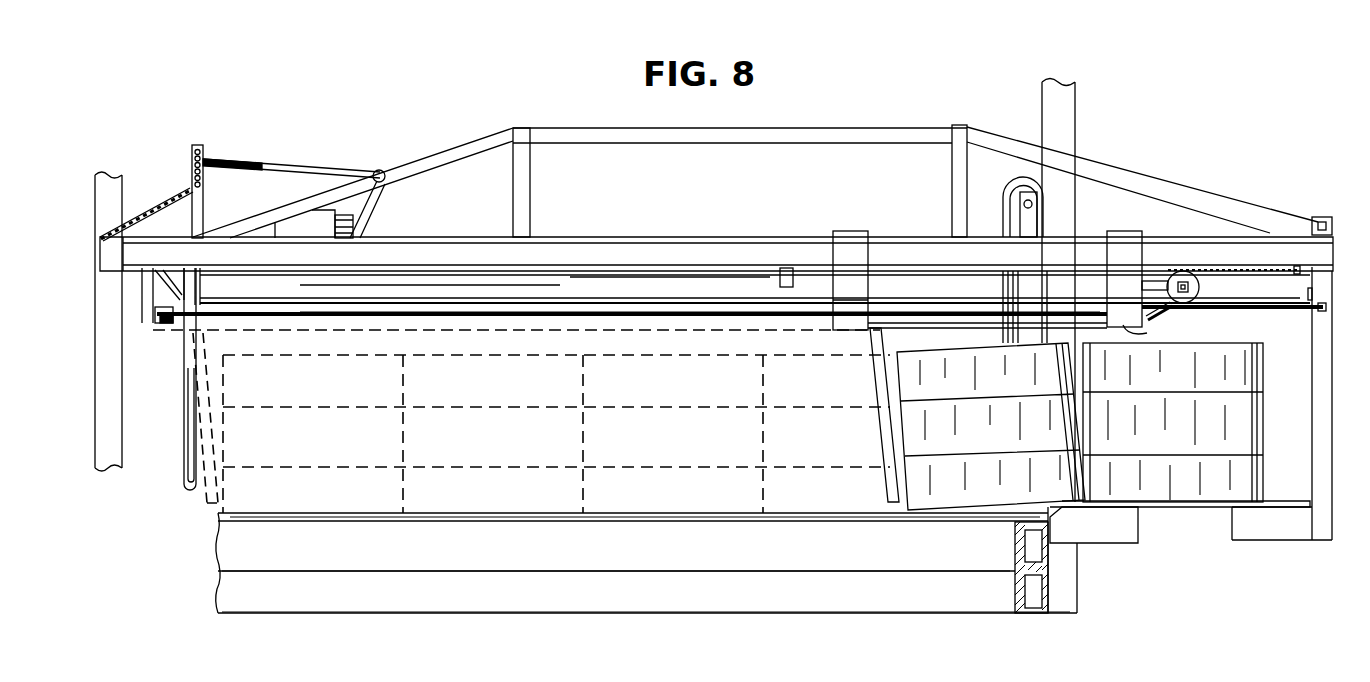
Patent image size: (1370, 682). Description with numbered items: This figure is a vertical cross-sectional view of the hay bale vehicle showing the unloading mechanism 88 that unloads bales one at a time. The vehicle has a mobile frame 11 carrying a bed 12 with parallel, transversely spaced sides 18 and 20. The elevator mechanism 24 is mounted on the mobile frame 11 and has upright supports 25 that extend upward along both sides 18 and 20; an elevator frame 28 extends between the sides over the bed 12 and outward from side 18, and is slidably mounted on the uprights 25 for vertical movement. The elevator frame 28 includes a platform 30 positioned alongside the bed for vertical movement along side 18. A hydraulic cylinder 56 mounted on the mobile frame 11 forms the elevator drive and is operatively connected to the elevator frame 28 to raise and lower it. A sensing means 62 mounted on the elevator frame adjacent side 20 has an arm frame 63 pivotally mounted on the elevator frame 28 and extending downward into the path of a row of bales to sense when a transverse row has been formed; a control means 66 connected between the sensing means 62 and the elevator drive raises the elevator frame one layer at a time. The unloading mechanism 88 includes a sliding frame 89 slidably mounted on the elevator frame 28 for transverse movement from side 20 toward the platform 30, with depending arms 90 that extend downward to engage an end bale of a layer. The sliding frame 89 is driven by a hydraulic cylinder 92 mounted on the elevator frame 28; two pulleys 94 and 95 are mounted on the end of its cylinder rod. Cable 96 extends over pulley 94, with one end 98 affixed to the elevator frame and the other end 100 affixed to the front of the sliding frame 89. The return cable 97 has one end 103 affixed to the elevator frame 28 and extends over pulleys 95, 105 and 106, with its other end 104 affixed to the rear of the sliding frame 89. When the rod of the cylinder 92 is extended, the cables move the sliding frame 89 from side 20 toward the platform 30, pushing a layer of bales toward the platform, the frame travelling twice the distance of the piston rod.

The mobile frame 11 is at (628, 607).
The bed 12 is at (630, 524).
The side 18 is at (1050, 598).
The side 20 is at (222, 596).
The elevator mechanism 24 is at (1260, 220).
The upright supports 25 is at (120, 184).
The elevator frame 28 is at (838, 128).
The platform 30 is at (1188, 508).
The hydraulic cylinder 56 is at (1022, 217).
The sensing means 62 is at (183, 446).
The arm frame 63 is at (185, 350).
The control means 66 is at (206, 151).
The unloading mechanism 88 is at (826, 328).
The sliding frame 89 is at (1142, 256).
The depending arms 90 is at (210, 447).
The hydraulic cylinder 92 is at (613, 275).
The pulley 94 is at (1183, 271).
The pulley 95 is at (1199, 290).
The cable 96 is at (1165, 308).
The return cable 97 is at (1245, 306).
The end of cable 96 98 is at (778, 280).
The end of cable 96 100 is at (1138, 325).
The end of return cable 103 is at (1300, 272).
The end of return cable 104 is at (850, 311).
The pulley 105 is at (1320, 309).
The pulley 106 is at (155, 325).